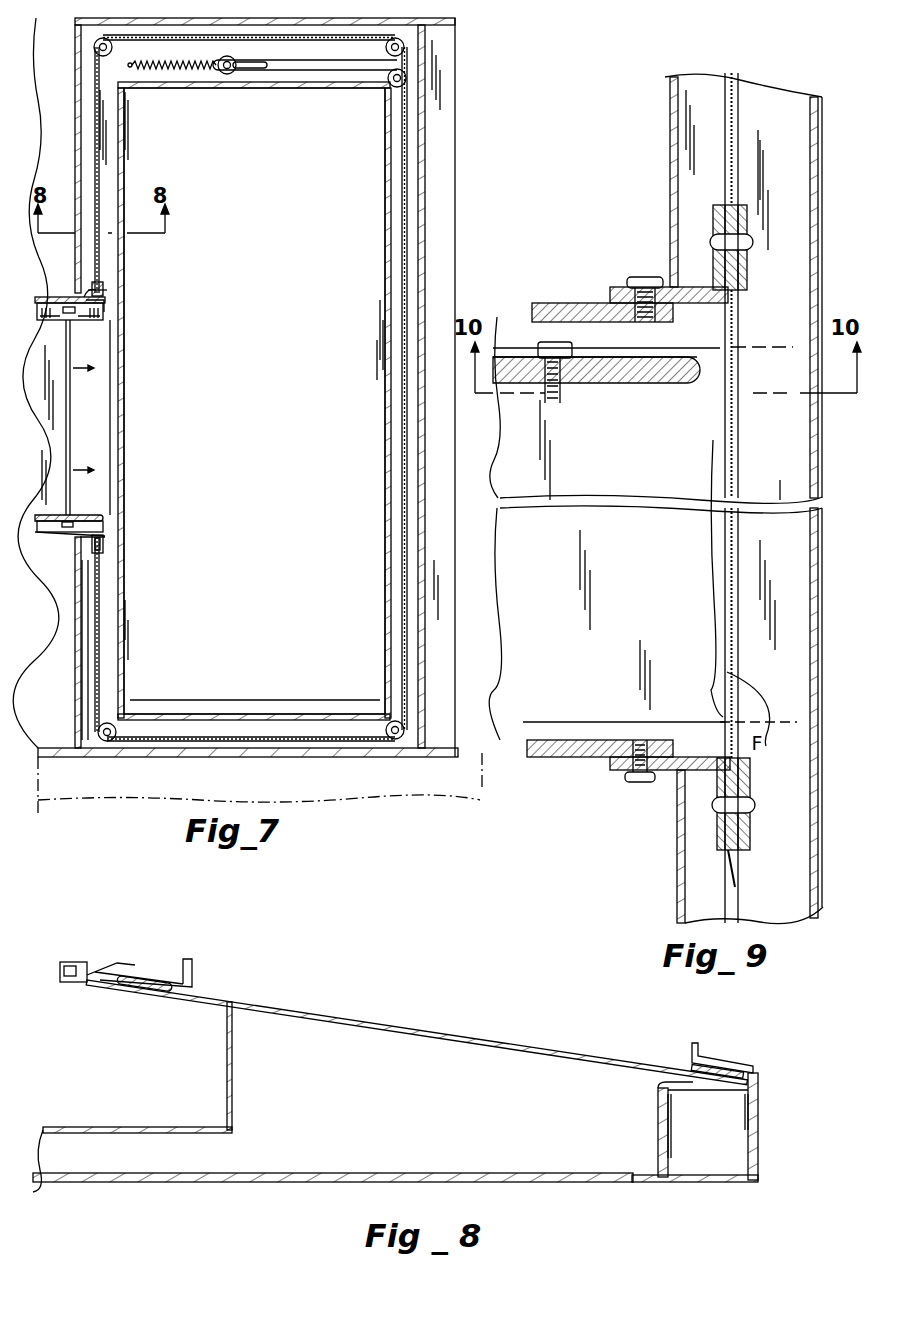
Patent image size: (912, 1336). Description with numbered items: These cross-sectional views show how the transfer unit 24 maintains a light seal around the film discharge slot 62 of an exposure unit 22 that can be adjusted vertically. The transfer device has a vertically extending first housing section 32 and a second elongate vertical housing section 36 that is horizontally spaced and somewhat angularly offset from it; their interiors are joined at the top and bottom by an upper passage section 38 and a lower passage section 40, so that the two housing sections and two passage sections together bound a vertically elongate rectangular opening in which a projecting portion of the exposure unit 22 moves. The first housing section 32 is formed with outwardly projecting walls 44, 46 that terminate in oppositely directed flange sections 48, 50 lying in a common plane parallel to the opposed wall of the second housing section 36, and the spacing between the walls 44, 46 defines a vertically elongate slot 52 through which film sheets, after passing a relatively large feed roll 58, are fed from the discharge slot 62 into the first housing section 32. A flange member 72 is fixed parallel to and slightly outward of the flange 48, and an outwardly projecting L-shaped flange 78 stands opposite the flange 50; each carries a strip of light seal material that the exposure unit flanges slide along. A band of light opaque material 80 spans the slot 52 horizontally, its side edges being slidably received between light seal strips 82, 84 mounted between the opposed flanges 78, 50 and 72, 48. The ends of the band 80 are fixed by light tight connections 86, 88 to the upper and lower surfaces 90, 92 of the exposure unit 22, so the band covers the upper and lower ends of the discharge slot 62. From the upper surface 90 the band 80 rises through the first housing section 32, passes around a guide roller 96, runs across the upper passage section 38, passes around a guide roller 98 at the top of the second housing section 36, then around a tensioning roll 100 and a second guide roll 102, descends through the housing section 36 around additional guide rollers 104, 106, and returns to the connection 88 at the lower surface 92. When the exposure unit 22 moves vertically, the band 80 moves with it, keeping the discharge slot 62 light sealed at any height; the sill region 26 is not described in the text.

In FIG. 7, the exposure unit 22 is at (59, 296).
In FIG. 9, the exposure unit 22 is at (560, 765).
In FIG. 7, the transfer unit 24 is at (126, 458).
In FIG. 9, the transfer unit 24 is at (672, 228).
In FIG. 8, the transfer unit 24 is at (586, 1186).
In FIG. 7, the sill 26 is at (472, 760).
In FIG. 7, the first housing section 32 is at (64, 157).
In FIG. 9, the first housing section 32 is at (670, 170).
In FIG. 8, the first housing section 32 is at (290, 1183).
In FIG. 7, the second housing section 36 is at (385, 380).
In FIG. 7, the upper passage section 38 is at (285, 90).
In FIG. 7, the lower passage section 40 is at (275, 715).
In FIG. 8, the outwardly projecting wall 44 is at (227, 1068).
In FIG. 8, the outwardly projecting wall 46 is at (657, 1117).
In FIG. 8, the flange section 48 is at (723, 1097).
In FIG. 8, the flange section 50 is at (156, 987).
In FIG. 8, the vertically elongate slot 52 is at (388, 1097).
In FIG. 9, the feed roll 58 is at (650, 385).
In FIG. 7, the film discharge slot 62 is at (80, 500).
In FIG. 9, the film discharge slot 62 is at (672, 594).
In FIG. 8, the flange member 72 is at (720, 1066).
In FIG. 8, the L-shaped flange 78 is at (155, 960).
In FIG. 7, the band of light opaque material 80 is at (402, 180).
In FIG. 9, the band of light opaque material 80 is at (738, 173).
In FIG. 8, the band of light opaque material 80 is at (440, 1030).
In FIG. 8, the light seal strip 82 is at (130, 972).
In FIG. 8, the light seal strip 84 is at (752, 1081).
In FIG. 7, the light tight connection 86 is at (95, 293).
In FIG. 9, the light tight connection 86 is at (705, 305).
In FIG. 7, the light tight connection 88 is at (106, 545).
In FIG. 9, the light tight connection 88 is at (688, 757).
In FIG. 7, the upper surface of exposure unit 90 is at (103, 315).
In FIG. 9, the upper surface of exposure unit 90 is at (598, 302).
In FIG. 7, the lower surface of exposure unit 92 is at (75, 577).
In FIG. 9, the lower surface of exposure unit 92 is at (590, 760).
In FIG. 7, the guide roller 96 is at (94, 47).
In FIG. 7, the guide roller 98 is at (405, 47).
In FIG. 7, the tensioning roll 100 is at (228, 75).
In FIG. 7, the second guide roll 102 is at (407, 80).
In FIG. 7, the guide roller 104 is at (398, 742).
In FIG. 7, the guide roller 106 is at (115, 742).